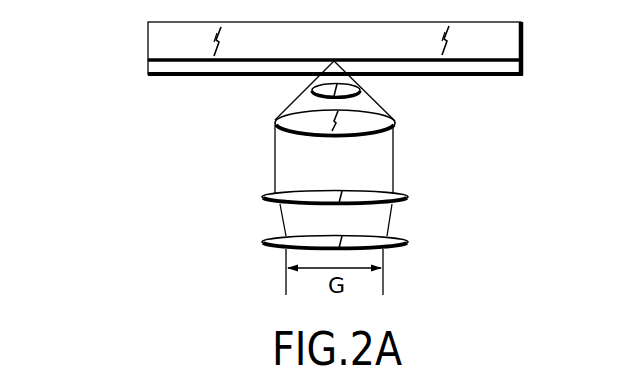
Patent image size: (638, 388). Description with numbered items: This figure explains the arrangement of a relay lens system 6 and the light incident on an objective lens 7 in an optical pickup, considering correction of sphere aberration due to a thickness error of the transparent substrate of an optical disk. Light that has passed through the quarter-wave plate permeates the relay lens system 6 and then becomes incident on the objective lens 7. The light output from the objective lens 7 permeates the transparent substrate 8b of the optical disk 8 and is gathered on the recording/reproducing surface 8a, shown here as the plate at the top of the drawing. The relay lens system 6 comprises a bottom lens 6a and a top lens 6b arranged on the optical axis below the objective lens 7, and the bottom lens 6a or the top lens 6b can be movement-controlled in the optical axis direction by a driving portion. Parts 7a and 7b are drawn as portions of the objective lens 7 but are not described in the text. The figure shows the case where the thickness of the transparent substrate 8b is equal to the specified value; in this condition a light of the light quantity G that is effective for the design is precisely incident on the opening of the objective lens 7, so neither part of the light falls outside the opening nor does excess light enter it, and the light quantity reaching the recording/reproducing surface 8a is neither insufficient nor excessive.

The optical disk 8 is at (284, 52).
The recording/reproducing surface 8a is at (148, 40).
The transparent substrate 8b is at (148, 65).
The objective lens 7 is at (220, 104).
The lens 7a is at (275, 118).
The small lens 7b is at (312, 89).
The relay lens system 6 is at (227, 215).
The bottom lens 6a is at (265, 235).
The top lens 6b is at (263, 193).